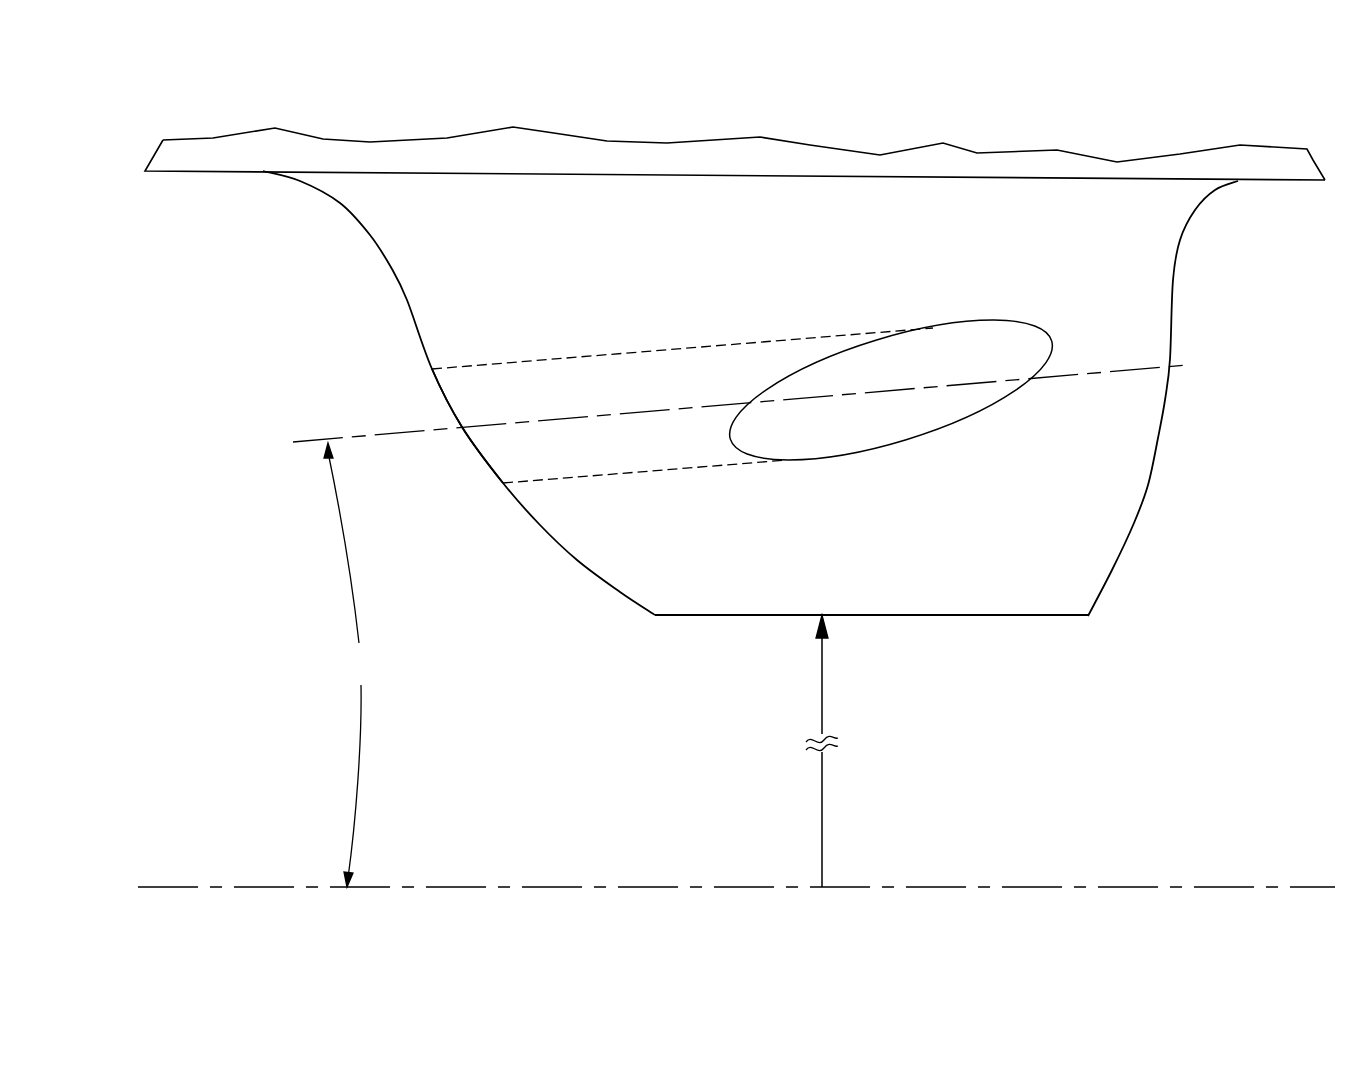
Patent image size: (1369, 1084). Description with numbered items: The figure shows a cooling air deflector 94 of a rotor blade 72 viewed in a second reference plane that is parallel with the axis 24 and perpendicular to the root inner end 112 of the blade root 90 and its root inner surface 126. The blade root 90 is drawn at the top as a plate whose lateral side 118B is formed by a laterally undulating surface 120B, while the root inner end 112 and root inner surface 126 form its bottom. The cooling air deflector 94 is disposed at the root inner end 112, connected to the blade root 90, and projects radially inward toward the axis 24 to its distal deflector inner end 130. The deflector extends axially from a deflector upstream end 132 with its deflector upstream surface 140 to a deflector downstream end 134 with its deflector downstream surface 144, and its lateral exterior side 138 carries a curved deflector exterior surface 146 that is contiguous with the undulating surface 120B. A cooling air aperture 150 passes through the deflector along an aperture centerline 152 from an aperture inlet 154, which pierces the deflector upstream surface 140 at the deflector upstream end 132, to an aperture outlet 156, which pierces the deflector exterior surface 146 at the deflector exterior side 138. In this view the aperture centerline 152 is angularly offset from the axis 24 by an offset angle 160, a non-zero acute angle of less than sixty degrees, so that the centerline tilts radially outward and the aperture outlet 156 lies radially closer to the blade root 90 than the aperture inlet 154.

The rotor blade 72 is at (1284, 125).
The blade root 90 is at (159, 133).
The lateral side of the blade root 118B is at (1070, 167).
The laterally undulating surface 120B is at (744, 128).
The root inner end 112 is at (187, 171).
The root inner surface 126 is at (704, 202).
The cooling air deflector 94 is at (389, 293).
The deflector upstream end 132 is at (392, 269).
The deflector upstream surface 140 is at (435, 393).
The deflector downstream end 134 is at (1176, 258).
The deflector downstream surface 144 is at (1220, 398).
The deflector inner end 130 is at (958, 616).
The deflector exterior side 138 is at (1102, 517).
The deflector exterior surface 146 is at (784, 442).
The cooling air aperture 150 is at (647, 473).
The aperture centerline 152 is at (308, 443).
The aperture inlet 154 is at (480, 460).
The aperture outlet 156 is at (908, 440).
The offset angle 160 is at (352, 665).
The axis 24 is at (158, 887).